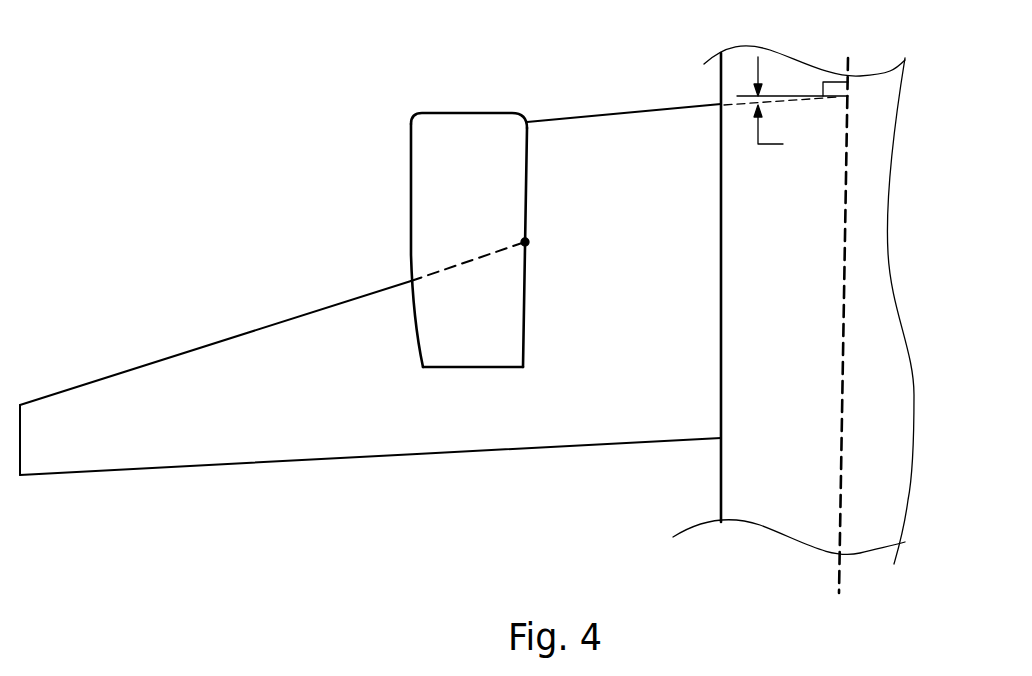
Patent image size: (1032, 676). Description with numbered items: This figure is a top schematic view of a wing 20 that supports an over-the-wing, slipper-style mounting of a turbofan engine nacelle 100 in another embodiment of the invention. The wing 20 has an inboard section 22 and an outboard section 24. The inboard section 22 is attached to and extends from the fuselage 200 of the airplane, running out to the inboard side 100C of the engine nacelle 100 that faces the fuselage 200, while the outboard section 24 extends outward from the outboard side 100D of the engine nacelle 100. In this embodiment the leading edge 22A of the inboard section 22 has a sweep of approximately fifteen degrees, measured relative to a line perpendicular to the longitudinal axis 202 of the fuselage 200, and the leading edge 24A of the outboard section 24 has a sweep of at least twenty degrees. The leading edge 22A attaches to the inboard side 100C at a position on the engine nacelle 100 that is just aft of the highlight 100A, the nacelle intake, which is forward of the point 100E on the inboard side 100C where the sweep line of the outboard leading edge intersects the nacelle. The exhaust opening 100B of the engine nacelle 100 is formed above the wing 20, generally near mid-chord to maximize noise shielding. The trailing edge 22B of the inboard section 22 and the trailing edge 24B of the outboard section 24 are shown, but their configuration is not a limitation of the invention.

The wing 20 is at (229, 254).
The inboard section 22 is at (600, 362).
The leading edge of inboard section 22A is at (587, 112).
The trailing edge of inboard section 22B is at (607, 445).
The outboard section 24 is at (210, 428).
The leading edge of outboard section 24A is at (230, 338).
The trailing edge of outboard section 24B is at (333, 457).
The engine nacelle 100 is at (437, 153).
The highlight 100A is at (457, 110).
The exhaust opening 100B is at (457, 372).
The inboard side 100C is at (527, 177).
The outboard side 100D is at (410, 205).
The point 100E is at (525, 242).
The fuselage 200 is at (713, 465).
The longitudinal axis 202 is at (839, 498).